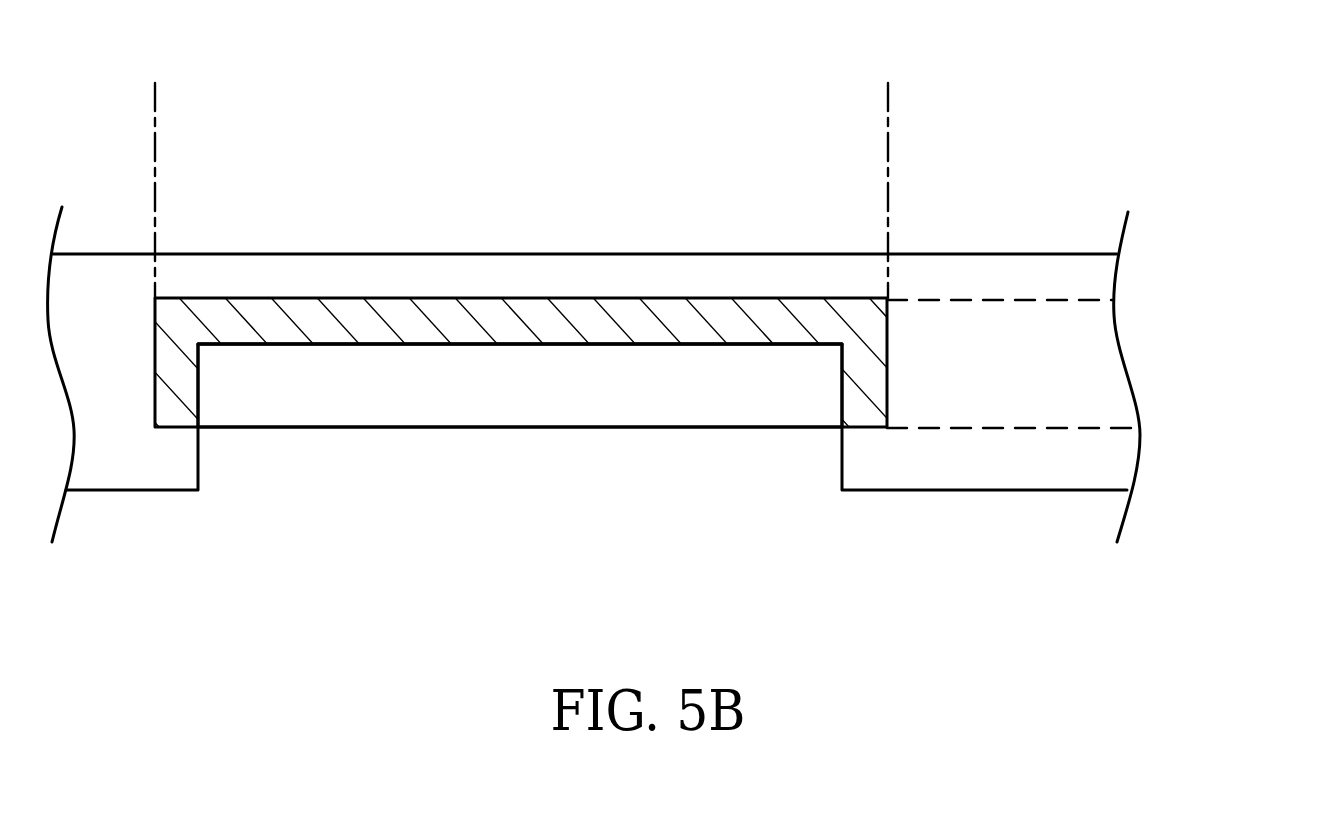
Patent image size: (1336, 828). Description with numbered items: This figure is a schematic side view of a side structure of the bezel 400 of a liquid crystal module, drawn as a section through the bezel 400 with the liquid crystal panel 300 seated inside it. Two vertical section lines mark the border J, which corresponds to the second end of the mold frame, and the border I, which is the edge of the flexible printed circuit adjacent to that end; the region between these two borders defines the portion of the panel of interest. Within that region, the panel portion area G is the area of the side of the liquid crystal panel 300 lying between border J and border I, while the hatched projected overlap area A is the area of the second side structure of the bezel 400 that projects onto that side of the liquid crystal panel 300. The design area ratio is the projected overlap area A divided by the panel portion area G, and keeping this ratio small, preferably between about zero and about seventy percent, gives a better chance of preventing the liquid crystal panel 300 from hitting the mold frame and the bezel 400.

The bezel 400 is at (1103, 367).
The liquid crystal panel 300 is at (698, 417).
The projected overlap area A is at (540, 327).
The panel portion area G is at (513, 385).
The border J is at (154, 171).
The border I is at (888, 171).